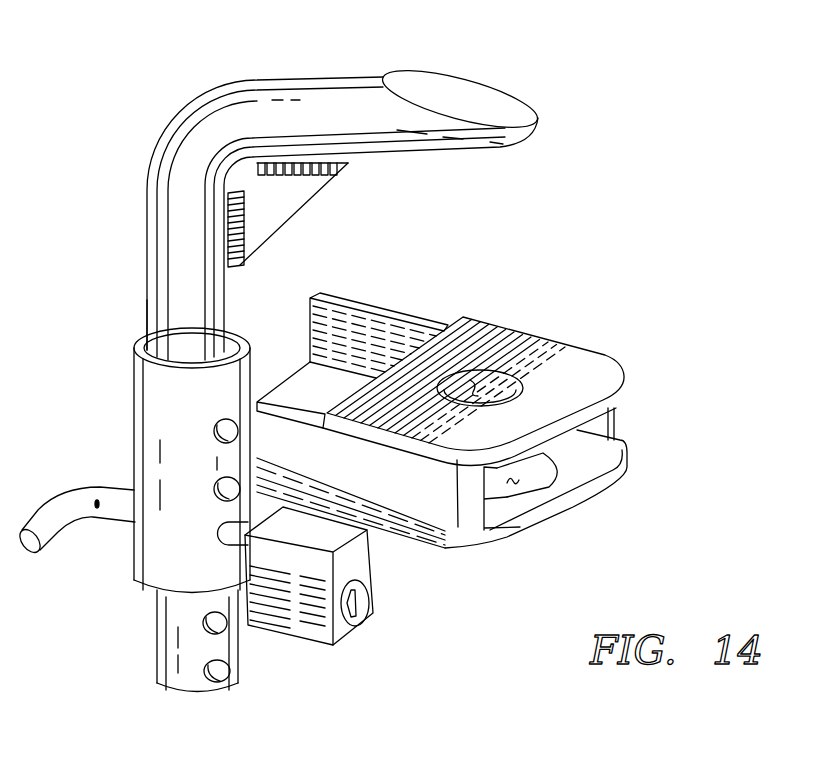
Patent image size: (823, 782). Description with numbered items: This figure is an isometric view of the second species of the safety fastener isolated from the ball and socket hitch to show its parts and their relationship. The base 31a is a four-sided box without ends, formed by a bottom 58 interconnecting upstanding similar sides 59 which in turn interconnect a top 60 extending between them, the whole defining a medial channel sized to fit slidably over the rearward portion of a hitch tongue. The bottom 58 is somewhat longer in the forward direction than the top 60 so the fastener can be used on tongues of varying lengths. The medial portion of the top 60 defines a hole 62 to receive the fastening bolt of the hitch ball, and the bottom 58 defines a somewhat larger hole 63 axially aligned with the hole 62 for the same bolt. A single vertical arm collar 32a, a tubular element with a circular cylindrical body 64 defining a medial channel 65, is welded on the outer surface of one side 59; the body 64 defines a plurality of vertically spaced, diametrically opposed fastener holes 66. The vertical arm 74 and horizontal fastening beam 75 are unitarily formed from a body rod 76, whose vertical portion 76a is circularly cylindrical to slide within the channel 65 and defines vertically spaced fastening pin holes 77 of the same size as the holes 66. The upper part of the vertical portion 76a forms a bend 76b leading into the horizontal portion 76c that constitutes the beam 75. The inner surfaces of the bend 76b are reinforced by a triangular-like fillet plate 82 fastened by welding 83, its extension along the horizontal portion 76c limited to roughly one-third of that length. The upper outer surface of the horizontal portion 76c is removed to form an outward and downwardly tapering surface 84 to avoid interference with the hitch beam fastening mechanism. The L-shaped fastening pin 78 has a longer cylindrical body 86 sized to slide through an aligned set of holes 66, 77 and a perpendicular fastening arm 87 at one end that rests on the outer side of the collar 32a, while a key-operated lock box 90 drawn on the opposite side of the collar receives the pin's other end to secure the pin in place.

The base 31a is at (582, 332).
The vertical arm collar 32a is at (272, 450).
The bottom 58 is at (303, 390).
The sides 59 is at (360, 300).
The top 60 is at (470, 347).
The hole 62 is at (505, 380).
The hole 63 is at (523, 483).
The cylindrical body 64 is at (177, 400).
The medial channel 65 is at (143, 327).
The fastener holes 66 is at (217, 482).
The vertical arm 74 is at (137, 220).
The horizontal fastening beam 75 is at (298, 72).
The body rod 76 is at (145, 290).
The vertical portion 76a is at (200, 293).
The bend 76b is at (187, 160).
The horizontal portion 76c is at (403, 127).
The fastening pin holes 77 is at (215, 673).
The fastening pin 78 is at (37, 555).
The fillet plate 82 is at (263, 192).
The welding 83 is at (245, 227).
The tapering surface 84 is at (540, 107).
The cylindrical body 86 is at (117, 505).
The fastening arm 87 is at (58, 522).
The lock box 90 is at (345, 575).